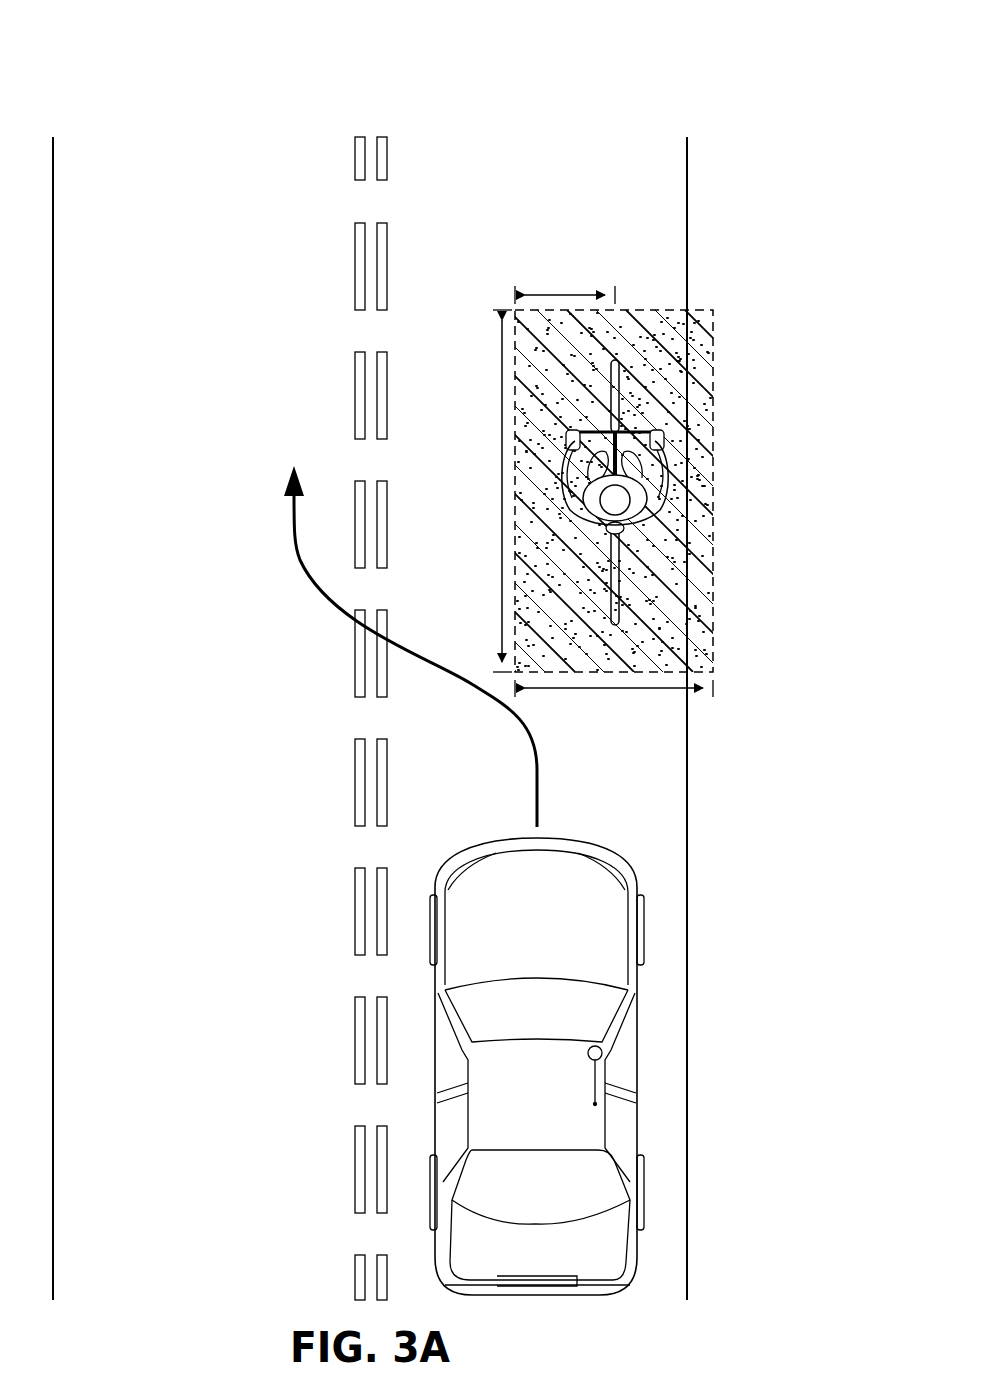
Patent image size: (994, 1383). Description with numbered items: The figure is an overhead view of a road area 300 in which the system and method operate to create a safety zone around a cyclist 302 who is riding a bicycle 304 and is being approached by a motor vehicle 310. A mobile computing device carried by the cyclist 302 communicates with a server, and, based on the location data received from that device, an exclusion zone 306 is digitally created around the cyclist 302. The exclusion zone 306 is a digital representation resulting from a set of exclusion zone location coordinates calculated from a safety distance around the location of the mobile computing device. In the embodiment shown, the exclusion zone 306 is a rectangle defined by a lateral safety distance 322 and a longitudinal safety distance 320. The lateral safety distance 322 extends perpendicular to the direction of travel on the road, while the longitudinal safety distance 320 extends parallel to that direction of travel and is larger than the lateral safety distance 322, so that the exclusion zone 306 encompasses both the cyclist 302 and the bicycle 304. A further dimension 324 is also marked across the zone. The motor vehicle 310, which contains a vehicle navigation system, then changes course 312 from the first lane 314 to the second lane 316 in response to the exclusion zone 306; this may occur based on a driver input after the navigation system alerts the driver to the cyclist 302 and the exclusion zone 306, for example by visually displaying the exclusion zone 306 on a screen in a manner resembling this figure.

The road area 300 is at (660, 72).
The cyclist 302 is at (570, 480).
The bicycle 304 is at (590, 598).
The exclusion zone 306 is at (715, 378).
The motor vehicle 310 is at (484, 843).
The course 312 is at (292, 532).
The first lane 314 is at (550, 162).
The second lane 316 is at (190, 162).
The longitudinal safety distance 320 is at (500, 455).
The lateral safety distance 322 is at (605, 690).
The lateral distance 324 is at (563, 292).